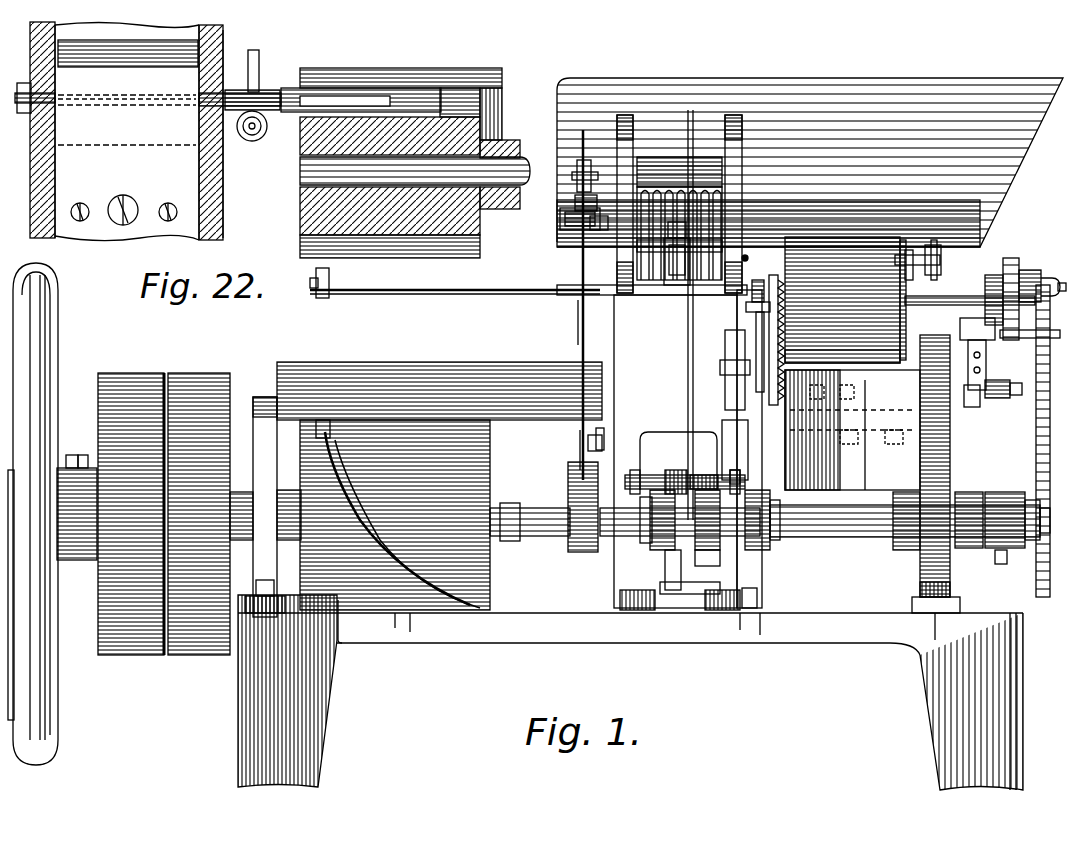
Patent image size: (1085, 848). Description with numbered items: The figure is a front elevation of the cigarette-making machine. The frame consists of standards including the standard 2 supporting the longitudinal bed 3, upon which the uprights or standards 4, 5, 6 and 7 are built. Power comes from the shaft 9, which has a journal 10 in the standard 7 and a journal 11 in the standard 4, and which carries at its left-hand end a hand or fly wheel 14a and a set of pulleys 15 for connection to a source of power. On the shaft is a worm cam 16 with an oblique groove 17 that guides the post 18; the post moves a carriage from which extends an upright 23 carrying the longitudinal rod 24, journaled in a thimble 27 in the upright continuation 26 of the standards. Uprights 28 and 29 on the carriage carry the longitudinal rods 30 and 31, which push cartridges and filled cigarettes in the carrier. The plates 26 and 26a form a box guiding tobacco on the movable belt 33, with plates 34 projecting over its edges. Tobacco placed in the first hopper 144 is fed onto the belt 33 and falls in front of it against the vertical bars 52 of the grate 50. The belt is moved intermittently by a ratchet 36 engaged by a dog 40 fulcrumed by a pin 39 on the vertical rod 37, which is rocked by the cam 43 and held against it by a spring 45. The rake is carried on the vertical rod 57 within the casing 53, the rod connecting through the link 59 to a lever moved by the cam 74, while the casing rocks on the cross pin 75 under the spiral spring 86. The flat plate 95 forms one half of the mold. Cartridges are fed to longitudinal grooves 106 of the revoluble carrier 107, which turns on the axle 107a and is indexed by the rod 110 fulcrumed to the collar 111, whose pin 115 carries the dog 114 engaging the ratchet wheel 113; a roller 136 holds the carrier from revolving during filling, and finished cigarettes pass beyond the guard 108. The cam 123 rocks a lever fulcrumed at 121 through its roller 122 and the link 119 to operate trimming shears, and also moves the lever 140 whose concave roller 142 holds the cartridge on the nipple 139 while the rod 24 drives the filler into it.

In FIG. 1, the standard 2 is at (292, 691).
In FIG. 1, the longitudinal bed 3 is at (865, 630).
In FIG. 1, the standard 4 is at (920, 573).
In FIG. 1, the standard 5 is at (750, 585).
In FIG. 1, the standard 6 is at (614, 575).
In FIG. 1, the standard 7 is at (270, 590).
In FIG. 1, the shaft 9 is at (545, 505).
In FIG. 1, the journal 10 is at (290, 488).
In FIG. 1, the journal 11 is at (890, 545).
In FIG. 1, the hand or fly wheel 14a is at (60, 712).
In FIG. 1, the set of pulleys 15 is at (164, 533).
In FIG. 1, the worm cam 16 is at (480, 478).
In FIG. 1, the oblique groove 17 is at (463, 612).
In FIG. 1, the post 18 is at (330, 430).
In FIG. 1, the upright 23 is at (330, 305).
In FIG. 22, the longitudinal rod 24 is at (280, 103).
In FIG. 1, the longitudinal rod 24 is at (440, 205).
In FIG. 22, the upright continuation of the standards 26 is at (126, 131).
In FIG. 1, the upright continuation of the standards 26 is at (627, 115).
In FIG. 22, the upright plate 26a is at (223, 190).
In FIG. 1, the upright plate 26a is at (730, 150).
In FIG. 1, the thimble 27 is at (597, 305).
In FIG. 1, the upright 28 is at (986, 345).
In FIG. 1, the upright 29 is at (970, 405).
In FIG. 1, the longitudinal rod 30 is at (989, 309).
In FIG. 1, the longitudinal rod 31 is at (1037, 335).
In FIG. 22, the movable belt 33 is at (128, 47).
In FIG. 1, the plates 34 is at (664, 285).
In FIG. 1, the ratchet 36 is at (560, 215).
In FIG. 1, the vertical rod 37 is at (570, 256).
In FIG. 1, the pin 39 is at (575, 200).
In FIG. 1, the dog 40 is at (590, 160).
In FIG. 1, the cam 43 is at (565, 552).
In FIG. 1, the spring 45 is at (600, 445).
In FIG. 1, the grate 50 is at (665, 157).
In FIG. 1, the vertical bars 52 is at (679, 221).
In FIG. 1, the casing 53 is at (686, 372).
In FIG. 1, the vertical rod 57 is at (657, 527).
In FIG. 1, the link 59 is at (681, 572).
In FIG. 1, the cam 74 is at (718, 528).
In FIG. 1, the cross pin 75 is at (685, 463).
In FIG. 1, the spiral spring 86 is at (700, 470).
In FIG. 22, the flat plate 95 is at (124, 191).
In FIG. 1, the longitudinal grooves 106 is at (502, 96).
In FIG. 1, the revoluble carrier 107 is at (505, 135).
In FIG. 1, the axle 107a is at (497, 214).
In FIG. 1, the guard 108 is at (502, 80).
In FIG. 1, the rod 110 is at (1062, 390).
In FIG. 1, the collar 111 is at (1015, 548).
In FIG. 1, the ratchet wheel 113 is at (1011, 258).
In FIG. 1, the dog 114 is at (1025, 268).
In FIG. 1, the pin 115 is at (1060, 268).
In FIG. 1, the link 119 is at (740, 395).
In FIG. 1, the fulcrum 121 is at (820, 420).
In FIG. 1, the roller 122 is at (830, 455).
In FIG. 1, the cam 123 is at (815, 490).
In FIG. 1, the roller 136 is at (918, 260).
In FIG. 22, the nipple 139 is at (236, 80).
In FIG. 1, the nipple 139 is at (745, 305).
In FIG. 22, the lever 140 is at (262, 86).
In FIG. 1, the lever 140 is at (755, 405).
In FIG. 22, the concave roller 142 is at (243, 138).
In FIG. 1, the concave roller 142 is at (752, 275).
In FIG. 1, the first hopper 144 is at (810, 162).